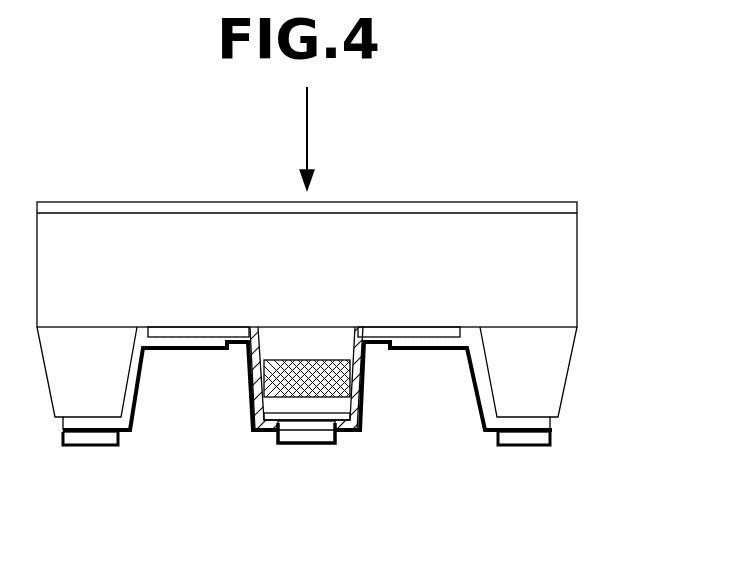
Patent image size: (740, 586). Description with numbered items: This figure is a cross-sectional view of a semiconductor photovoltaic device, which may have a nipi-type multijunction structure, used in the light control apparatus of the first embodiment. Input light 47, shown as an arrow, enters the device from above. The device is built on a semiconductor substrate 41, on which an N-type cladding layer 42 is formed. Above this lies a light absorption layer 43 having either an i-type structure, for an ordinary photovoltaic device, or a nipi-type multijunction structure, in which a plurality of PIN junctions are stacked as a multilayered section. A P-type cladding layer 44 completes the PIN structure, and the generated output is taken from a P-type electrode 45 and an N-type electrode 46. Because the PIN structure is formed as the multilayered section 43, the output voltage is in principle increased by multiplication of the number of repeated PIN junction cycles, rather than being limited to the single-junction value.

The semiconductor substrate 41 is at (565, 246).
The N-type cladding layer 42 is at (354, 350).
The light absorption layer 43 is at (257, 372).
The P-type cladding layer 44 is at (356, 403).
The P-type electrode 45 is at (293, 447).
The N-type electrode 46 is at (90, 447).
The input light 47 is at (309, 110).